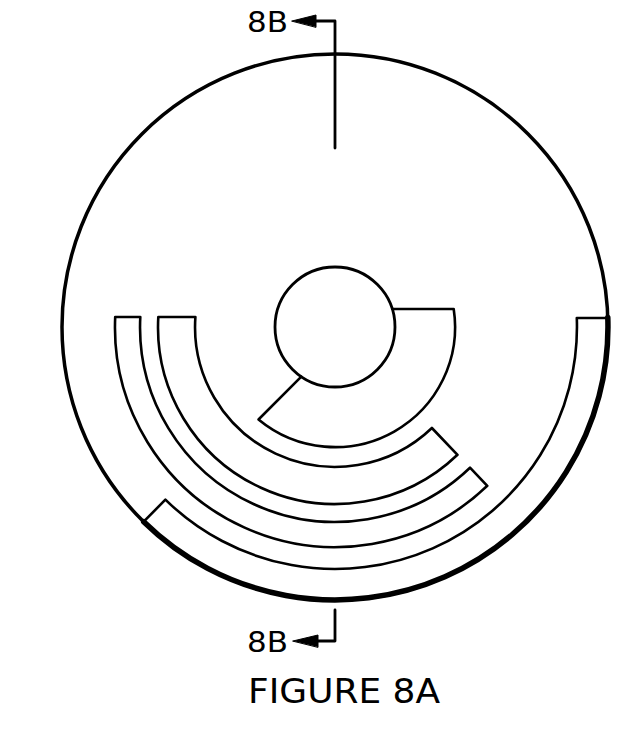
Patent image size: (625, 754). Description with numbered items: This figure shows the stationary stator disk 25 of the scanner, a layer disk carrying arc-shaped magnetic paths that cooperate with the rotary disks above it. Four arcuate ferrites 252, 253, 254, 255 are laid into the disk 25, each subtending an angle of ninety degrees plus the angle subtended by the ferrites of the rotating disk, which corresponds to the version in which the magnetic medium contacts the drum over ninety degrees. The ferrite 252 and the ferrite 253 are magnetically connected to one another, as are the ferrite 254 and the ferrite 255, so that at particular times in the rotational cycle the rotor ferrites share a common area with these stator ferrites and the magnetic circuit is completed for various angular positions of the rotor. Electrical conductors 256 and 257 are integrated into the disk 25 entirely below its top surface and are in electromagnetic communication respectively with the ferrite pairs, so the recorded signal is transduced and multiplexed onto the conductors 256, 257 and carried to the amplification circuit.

The stationary disk 25 is at (518, 120).
The ferrite 252 is at (148, 518).
The ferrite 253 is at (140, 437).
The ferrite 254 is at (442, 435).
The ferrite 255 is at (447, 373).
The electrical conductor 256 is at (173, 497).
The electrical conductor 257 is at (425, 418).